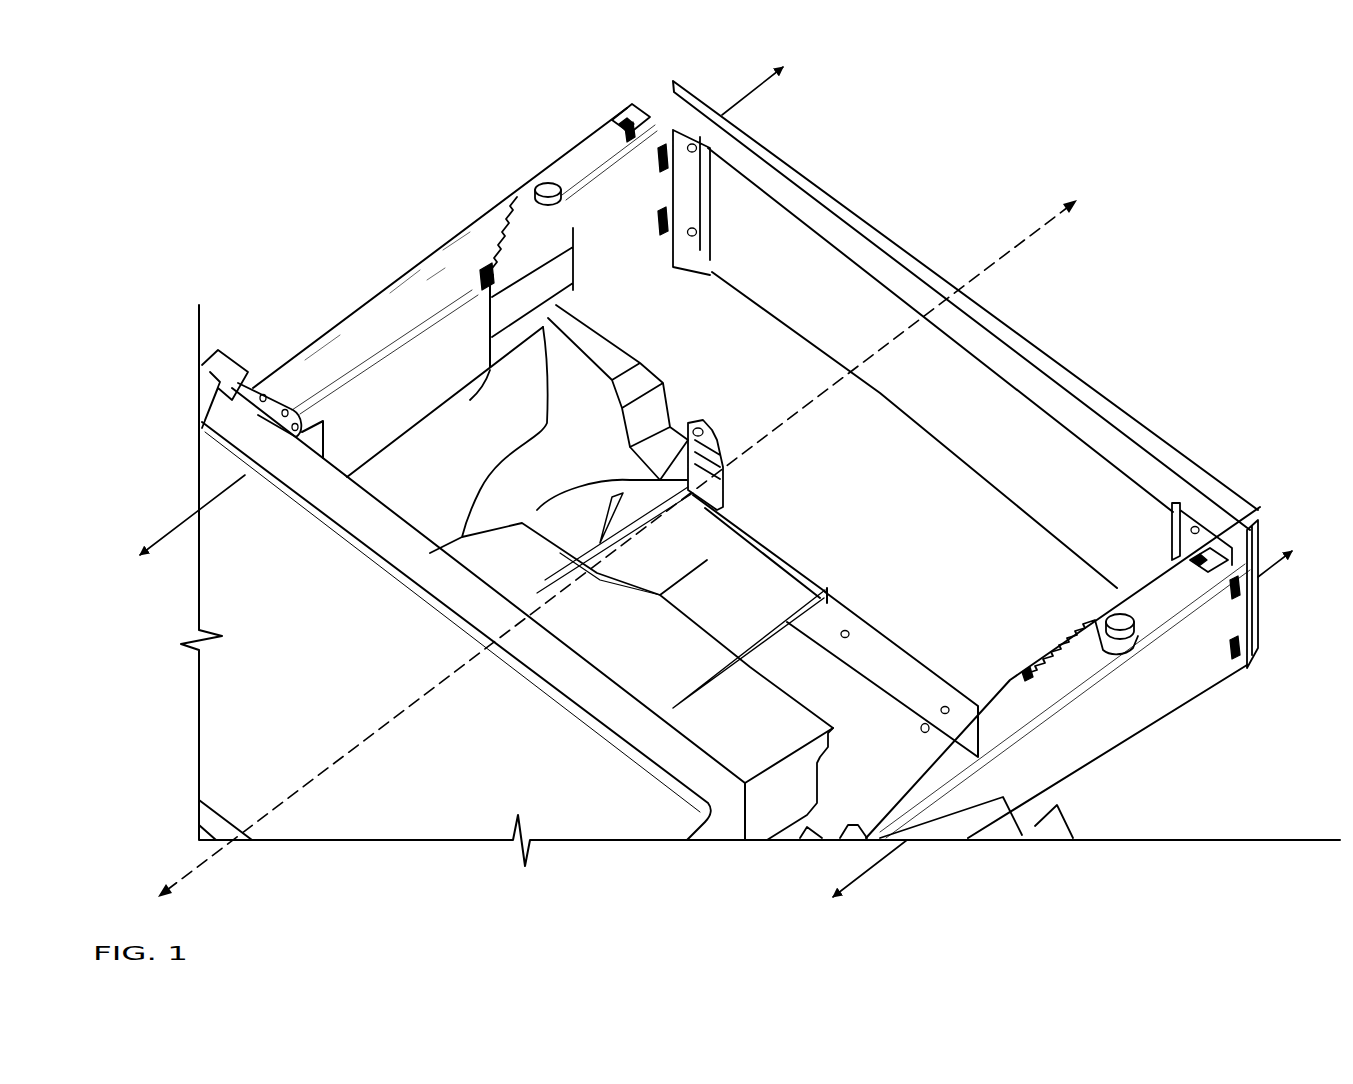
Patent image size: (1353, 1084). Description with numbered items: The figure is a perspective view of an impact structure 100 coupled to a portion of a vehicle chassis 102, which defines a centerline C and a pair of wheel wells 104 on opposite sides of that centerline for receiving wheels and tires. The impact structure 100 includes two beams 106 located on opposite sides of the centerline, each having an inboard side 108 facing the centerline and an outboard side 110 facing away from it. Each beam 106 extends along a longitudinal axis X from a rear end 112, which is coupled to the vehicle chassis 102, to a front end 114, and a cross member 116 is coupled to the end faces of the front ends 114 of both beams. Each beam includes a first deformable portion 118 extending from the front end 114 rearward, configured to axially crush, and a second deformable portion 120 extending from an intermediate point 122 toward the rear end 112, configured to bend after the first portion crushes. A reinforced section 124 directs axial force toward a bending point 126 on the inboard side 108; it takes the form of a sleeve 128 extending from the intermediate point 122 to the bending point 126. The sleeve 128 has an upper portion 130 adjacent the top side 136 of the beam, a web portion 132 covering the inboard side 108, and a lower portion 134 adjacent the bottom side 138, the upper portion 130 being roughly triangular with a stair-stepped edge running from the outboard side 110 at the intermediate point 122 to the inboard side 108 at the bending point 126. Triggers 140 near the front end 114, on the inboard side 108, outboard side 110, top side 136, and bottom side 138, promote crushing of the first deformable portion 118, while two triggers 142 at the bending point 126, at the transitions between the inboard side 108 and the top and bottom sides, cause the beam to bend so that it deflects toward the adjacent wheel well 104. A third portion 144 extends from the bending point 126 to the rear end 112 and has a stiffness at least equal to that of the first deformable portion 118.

The impact structure 100 is at (835, 124).
The vehicle chassis 102 is at (318, 594).
The wheel wells 104 is at (345, 155).
The beams 106 is at (343, 323).
The inboard side 108 is at (373, 438).
The outboard side 110 is at (390, 293).
The rear end 112 is at (267, 373).
The front end 114 is at (625, 130).
The cross member 116 is at (1040, 373).
The first deformable portion 118 is at (610, 122).
The second deformable portion 120 is at (443, 250).
The intermediate point 122 is at (593, 255).
The reinforced section 124 is at (497, 316).
The bending point 126 is at (483, 368).
The sleeve 128 is at (568, 227).
The upper portion 130 is at (530, 213).
The web portion 132 is at (553, 280).
The lower portion 134 is at (508, 362).
The top side 136 is at (427, 280).
The bottom side 138 is at (357, 470).
The triggers 140 is at (627, 127).
The triggers 142 is at (485, 278).
The third portion 144 is at (323, 360).